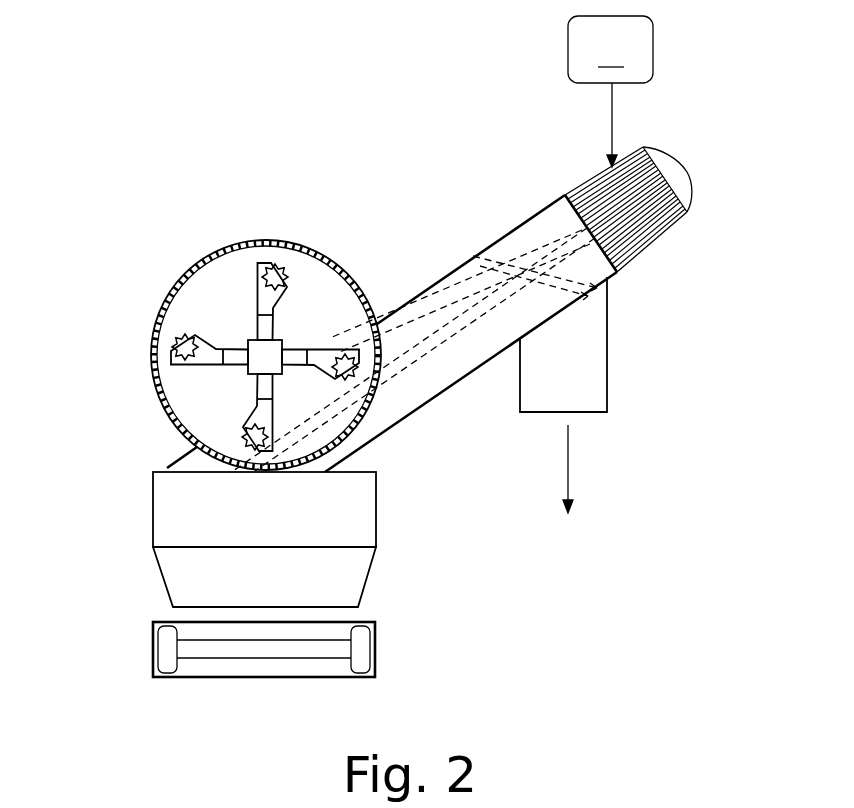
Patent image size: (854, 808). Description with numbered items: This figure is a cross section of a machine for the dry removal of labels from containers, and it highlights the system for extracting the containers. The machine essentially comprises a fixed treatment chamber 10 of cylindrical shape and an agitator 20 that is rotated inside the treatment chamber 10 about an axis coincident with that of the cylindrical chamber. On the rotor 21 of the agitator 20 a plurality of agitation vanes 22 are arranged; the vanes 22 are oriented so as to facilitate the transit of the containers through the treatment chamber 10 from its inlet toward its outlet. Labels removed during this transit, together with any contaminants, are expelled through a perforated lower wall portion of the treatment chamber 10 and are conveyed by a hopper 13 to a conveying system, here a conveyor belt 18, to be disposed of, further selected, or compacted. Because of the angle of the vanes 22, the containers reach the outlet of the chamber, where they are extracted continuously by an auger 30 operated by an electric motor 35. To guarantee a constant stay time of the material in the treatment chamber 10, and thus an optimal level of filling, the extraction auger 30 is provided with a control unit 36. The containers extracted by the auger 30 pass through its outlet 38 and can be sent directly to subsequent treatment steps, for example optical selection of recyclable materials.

The treatment chamber 10 is at (178, 287).
The hopper 13 is at (188, 500).
The conveyor belt 18 is at (258, 678).
The agitator 20 is at (219, 387).
The rotor 21 is at (272, 353).
The agitation vanes 22 is at (253, 288).
The auger 30 is at (467, 383).
The electric motor 35 is at (640, 218).
The control unit 36 is at (610, 91).
The outlet 38 is at (585, 413).